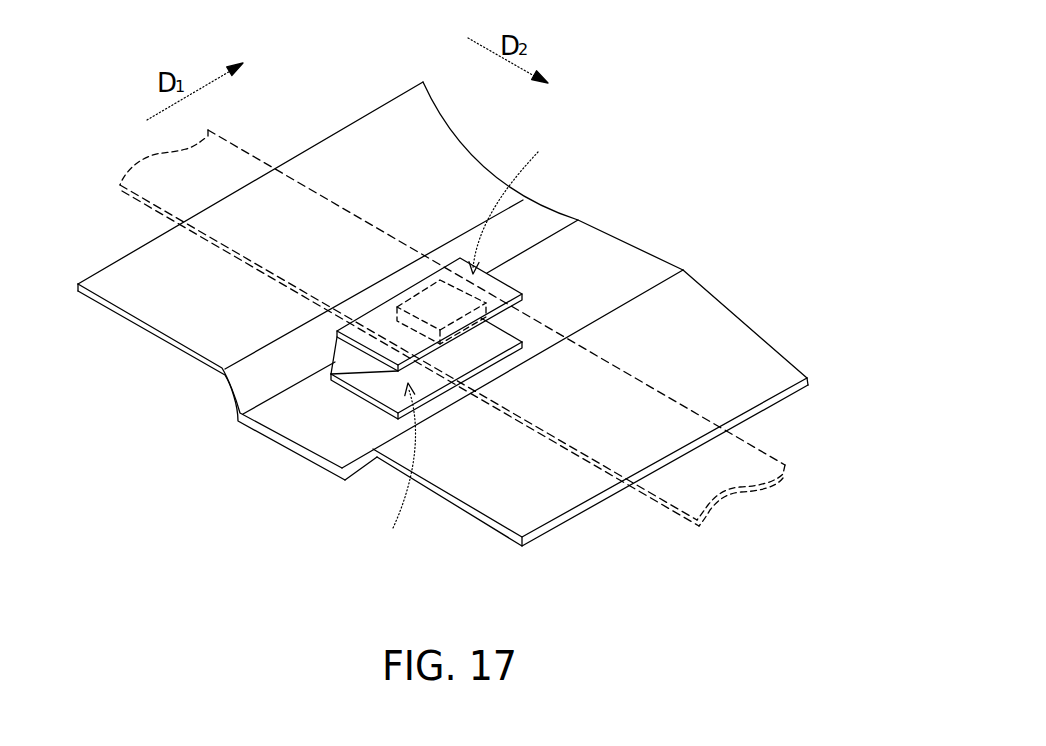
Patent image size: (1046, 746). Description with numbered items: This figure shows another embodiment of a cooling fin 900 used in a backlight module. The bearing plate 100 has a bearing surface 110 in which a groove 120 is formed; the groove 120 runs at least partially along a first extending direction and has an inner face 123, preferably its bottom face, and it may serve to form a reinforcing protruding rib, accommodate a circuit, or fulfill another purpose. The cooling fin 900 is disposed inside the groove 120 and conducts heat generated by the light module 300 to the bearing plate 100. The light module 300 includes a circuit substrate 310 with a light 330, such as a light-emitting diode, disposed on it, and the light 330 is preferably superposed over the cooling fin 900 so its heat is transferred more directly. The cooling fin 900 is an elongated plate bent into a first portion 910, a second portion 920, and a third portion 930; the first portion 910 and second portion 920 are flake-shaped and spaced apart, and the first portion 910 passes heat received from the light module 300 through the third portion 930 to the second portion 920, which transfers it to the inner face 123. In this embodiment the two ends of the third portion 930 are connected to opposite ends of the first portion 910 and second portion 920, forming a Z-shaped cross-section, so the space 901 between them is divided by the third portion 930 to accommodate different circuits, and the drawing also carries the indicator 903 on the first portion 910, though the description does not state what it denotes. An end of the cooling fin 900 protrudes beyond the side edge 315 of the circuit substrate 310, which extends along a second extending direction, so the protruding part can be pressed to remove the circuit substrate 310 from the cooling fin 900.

The bearing plate 100 is at (443, 352).
The bearing surface 110 is at (556, 493).
The groove 120 is at (532, 243).
The inner face 123 is at (646, 272).
The light module 300 is at (462, 328).
The circuit substrate 310 is at (603, 382).
The side edge 315 is at (150, 210).
The light 330 is at (455, 307).
The cooling fin 900 is at (297, 403).
The first portion 910 is at (337, 331).
The second portion 920 is at (378, 396).
The third portion 930 is at (375, 364).
The space 901 is at (393, 475).
The pressing direction arrow 903 is at (517, 198).